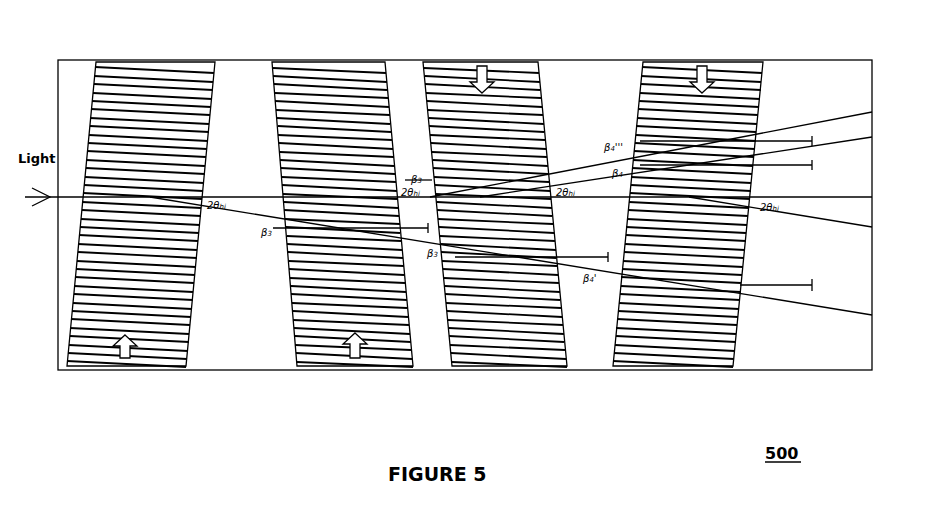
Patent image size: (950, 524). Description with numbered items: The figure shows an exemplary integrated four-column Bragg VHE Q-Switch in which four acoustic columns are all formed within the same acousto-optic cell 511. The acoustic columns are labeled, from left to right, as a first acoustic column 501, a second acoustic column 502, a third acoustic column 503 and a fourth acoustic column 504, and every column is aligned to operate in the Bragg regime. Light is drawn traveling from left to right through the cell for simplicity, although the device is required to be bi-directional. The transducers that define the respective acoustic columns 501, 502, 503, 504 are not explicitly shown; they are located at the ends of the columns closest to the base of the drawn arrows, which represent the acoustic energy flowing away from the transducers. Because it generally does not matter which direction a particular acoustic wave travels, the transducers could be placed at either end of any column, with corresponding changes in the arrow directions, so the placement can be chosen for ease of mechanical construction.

The acoustic column 501 is at (92, 307).
The acoustic column 502 is at (293, 311).
The acoustic column 503 is at (558, 347).
The acoustic column 504 is at (733, 347).
The acousto-optic cell 511 is at (803, 61).